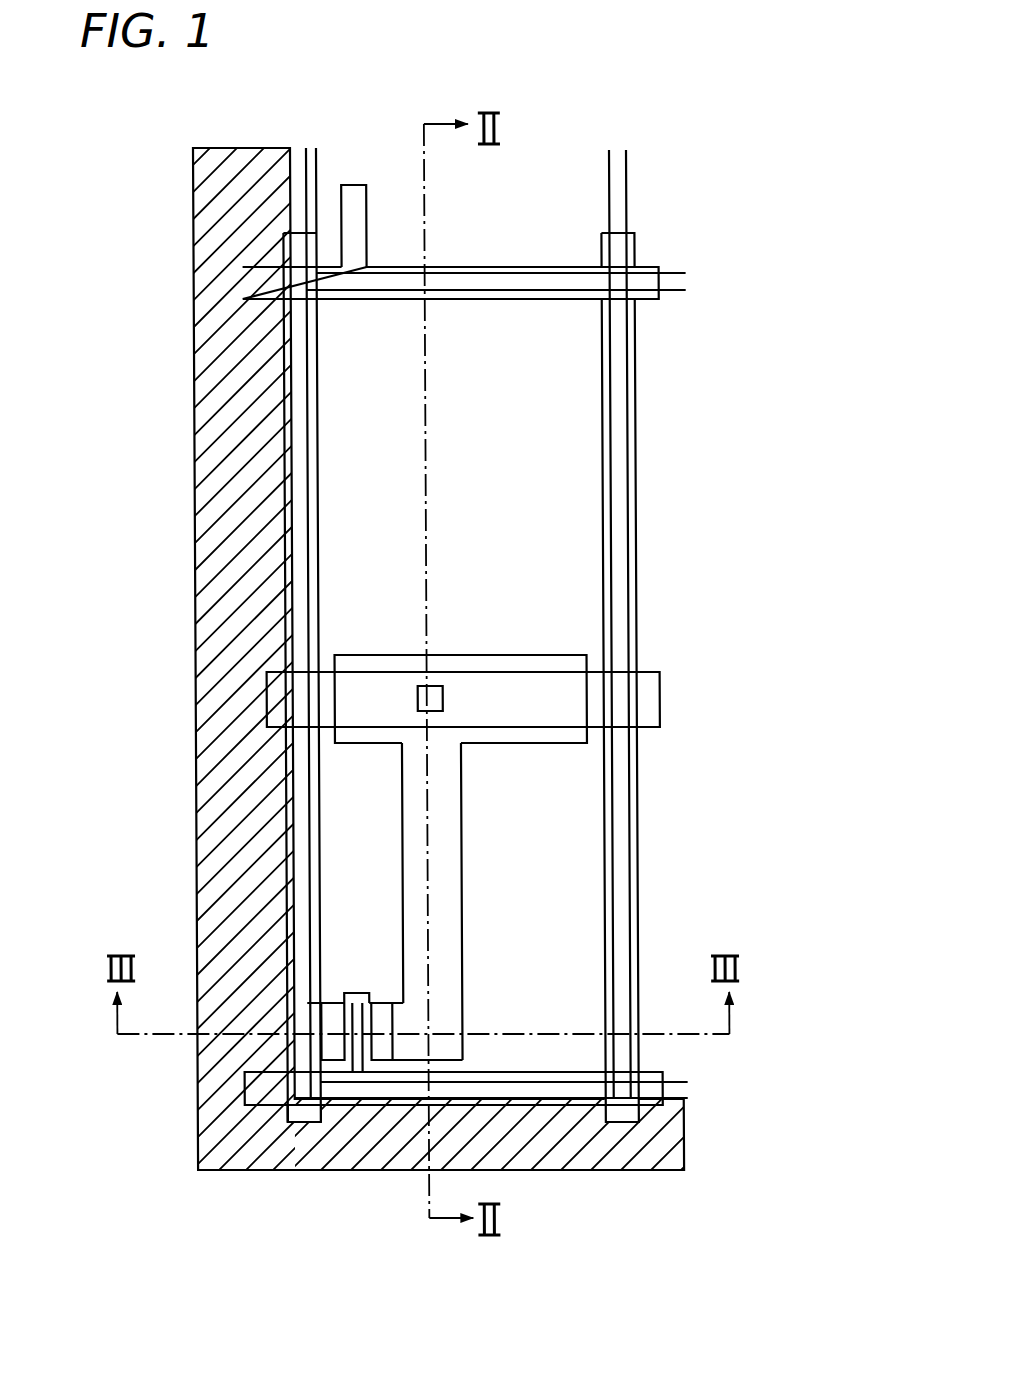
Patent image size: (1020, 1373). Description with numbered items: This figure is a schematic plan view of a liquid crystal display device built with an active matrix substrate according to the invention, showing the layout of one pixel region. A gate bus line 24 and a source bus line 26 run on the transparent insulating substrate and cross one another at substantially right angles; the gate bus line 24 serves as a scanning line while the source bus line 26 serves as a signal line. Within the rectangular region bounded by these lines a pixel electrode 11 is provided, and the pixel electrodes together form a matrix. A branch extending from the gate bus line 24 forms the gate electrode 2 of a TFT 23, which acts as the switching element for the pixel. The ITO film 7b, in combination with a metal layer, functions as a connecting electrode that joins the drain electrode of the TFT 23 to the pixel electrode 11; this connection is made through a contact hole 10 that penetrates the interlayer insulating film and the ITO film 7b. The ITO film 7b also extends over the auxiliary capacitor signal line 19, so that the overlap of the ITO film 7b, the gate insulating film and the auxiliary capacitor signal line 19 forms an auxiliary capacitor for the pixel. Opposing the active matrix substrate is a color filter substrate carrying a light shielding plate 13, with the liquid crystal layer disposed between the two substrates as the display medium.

The gate electrode 2 is at (356, 185).
The light shielding plate 13 is at (205, 229).
The pixel electrode 11 is at (583, 414).
The contact hole 10 is at (440, 688).
The auxiliary capacitor signal line 19 is at (654, 704).
The ITO film 7b is at (447, 855).
The TFT 23 is at (360, 968).
The gate bus line 24 is at (658, 1086).
The source bus line 26 is at (290, 1112).